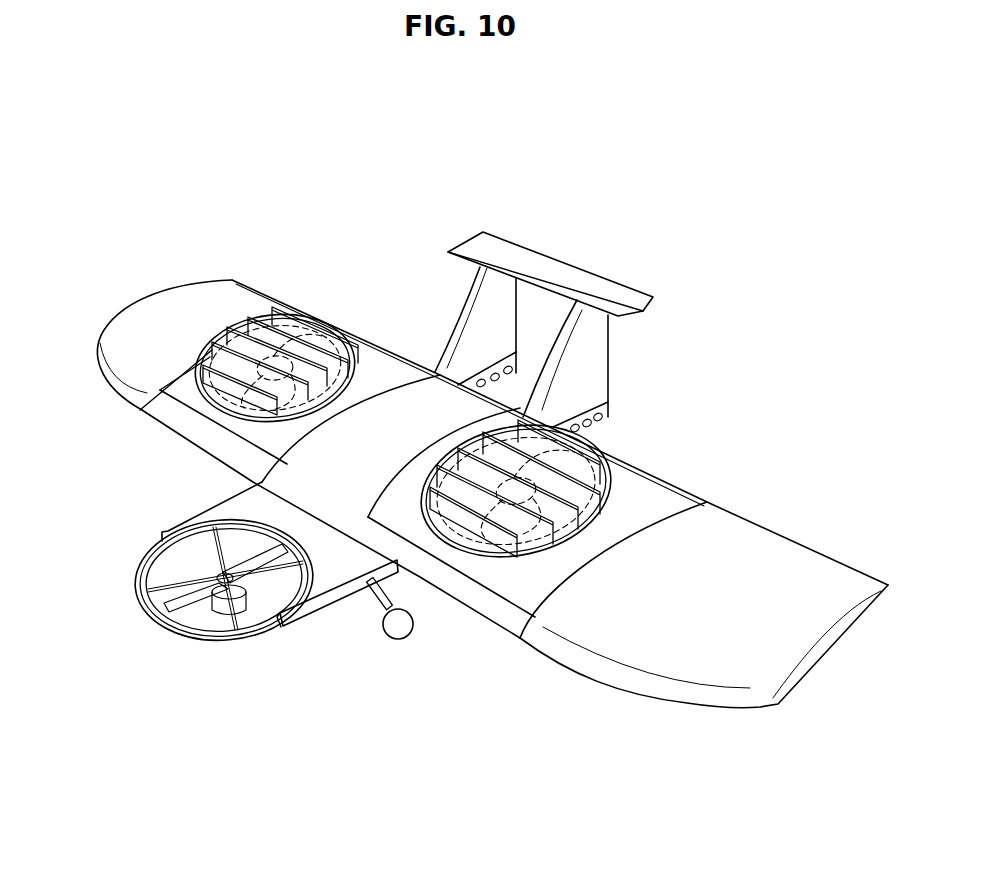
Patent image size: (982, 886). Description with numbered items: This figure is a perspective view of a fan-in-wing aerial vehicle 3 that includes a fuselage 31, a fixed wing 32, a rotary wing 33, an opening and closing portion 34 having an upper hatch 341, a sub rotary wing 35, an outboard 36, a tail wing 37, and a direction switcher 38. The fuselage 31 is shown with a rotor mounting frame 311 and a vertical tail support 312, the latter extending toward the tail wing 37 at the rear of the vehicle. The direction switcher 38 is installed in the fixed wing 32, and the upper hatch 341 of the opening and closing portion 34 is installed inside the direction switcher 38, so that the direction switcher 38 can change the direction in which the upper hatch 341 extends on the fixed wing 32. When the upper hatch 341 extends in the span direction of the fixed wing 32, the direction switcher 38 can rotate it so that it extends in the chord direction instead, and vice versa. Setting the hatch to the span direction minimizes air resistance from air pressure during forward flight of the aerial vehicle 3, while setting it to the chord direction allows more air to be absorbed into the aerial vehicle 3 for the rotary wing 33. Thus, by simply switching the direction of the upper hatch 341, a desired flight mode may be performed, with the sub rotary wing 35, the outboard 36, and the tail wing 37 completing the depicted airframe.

The fan-in-wing aerial vehicle 3 is at (421, 108).
The fuselage 31 is at (352, 497).
The rotor mounting frame 311 is at (277, 500).
The vertical tail support 312 is at (500, 397).
The fixed wing 32 is at (365, 356).
The rotary wing 33 is at (213, 347).
The opening and closing portion 34 is at (338, 218).
The upper hatch 341 is at (337, 363).
The sub rotary wing 35 is at (163, 663).
The outboard 36 is at (158, 310).
The tail wing 37 is at (558, 270).
The direction switcher 38 is at (190, 362).